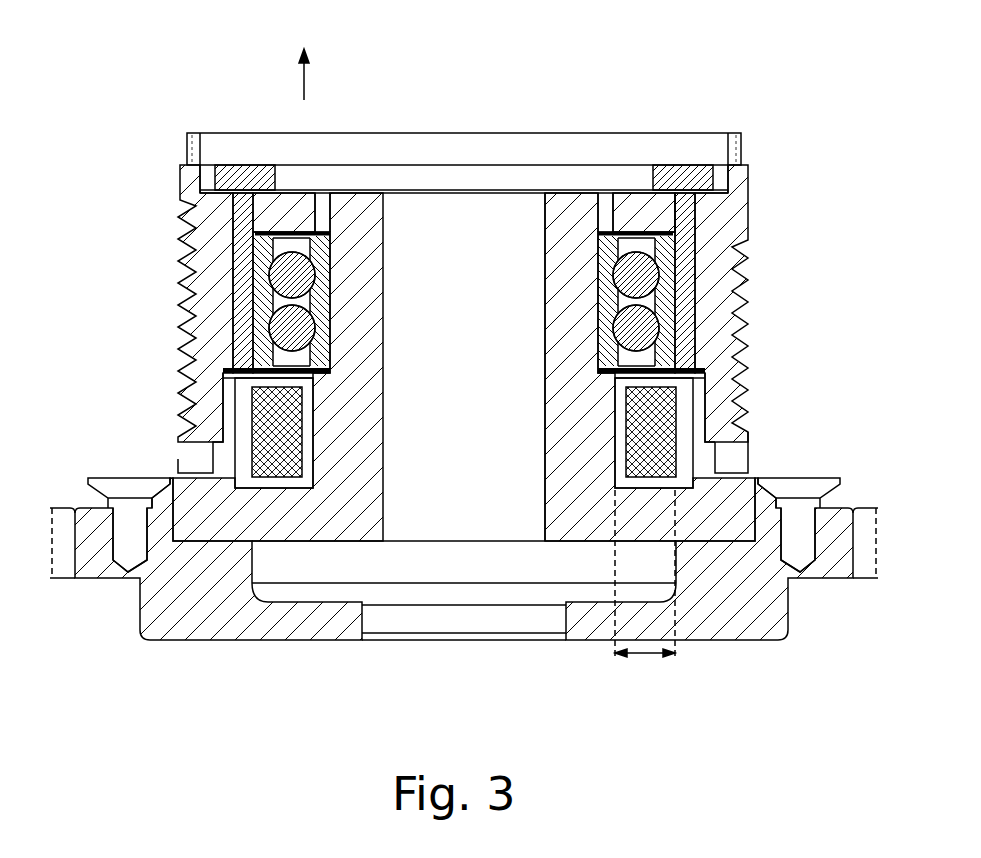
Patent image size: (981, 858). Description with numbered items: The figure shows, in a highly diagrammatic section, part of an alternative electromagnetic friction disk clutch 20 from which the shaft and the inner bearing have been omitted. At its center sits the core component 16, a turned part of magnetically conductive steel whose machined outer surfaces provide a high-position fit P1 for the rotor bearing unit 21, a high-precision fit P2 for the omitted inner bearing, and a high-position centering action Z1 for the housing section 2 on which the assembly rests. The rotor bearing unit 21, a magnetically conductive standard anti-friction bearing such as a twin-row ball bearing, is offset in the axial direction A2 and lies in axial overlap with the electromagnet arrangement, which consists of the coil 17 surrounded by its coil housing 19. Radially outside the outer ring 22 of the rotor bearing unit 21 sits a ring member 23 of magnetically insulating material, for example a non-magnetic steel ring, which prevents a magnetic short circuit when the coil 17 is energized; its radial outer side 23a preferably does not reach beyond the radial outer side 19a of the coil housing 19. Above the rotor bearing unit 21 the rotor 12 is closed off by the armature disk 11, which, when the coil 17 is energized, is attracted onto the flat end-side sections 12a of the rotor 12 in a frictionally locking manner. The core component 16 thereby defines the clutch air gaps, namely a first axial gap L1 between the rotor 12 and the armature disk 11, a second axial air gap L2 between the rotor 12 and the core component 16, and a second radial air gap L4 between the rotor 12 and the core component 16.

The housing section 2 is at (752, 604).
The armature disk 11 is at (694, 160).
The rotor 12 is at (200, 232).
The end-side sections 12a is at (233, 205).
The core component 16 is at (360, 448).
The coil 17 is at (252, 398).
The coil housing 19 is at (705, 384).
The radial outer side 19a is at (712, 463).
The friction disk clutch 20 is at (805, 154).
The rotor bearing unit 21 is at (336, 246).
The outer ring 22 is at (257, 327).
The ring member 23 is at (235, 290).
The radial outer side 23a is at (705, 240).
The axial direction A2 is at (300, 73).
The first axial gap L1 is at (665, 166).
The second axial air gap L2 is at (178, 472).
The second radial air gap L4 is at (713, 412).
The high-position fit P1 is at (598, 295).
The high-precision fit P2 is at (545, 302).
The high-position centering action Z1 is at (755, 522).